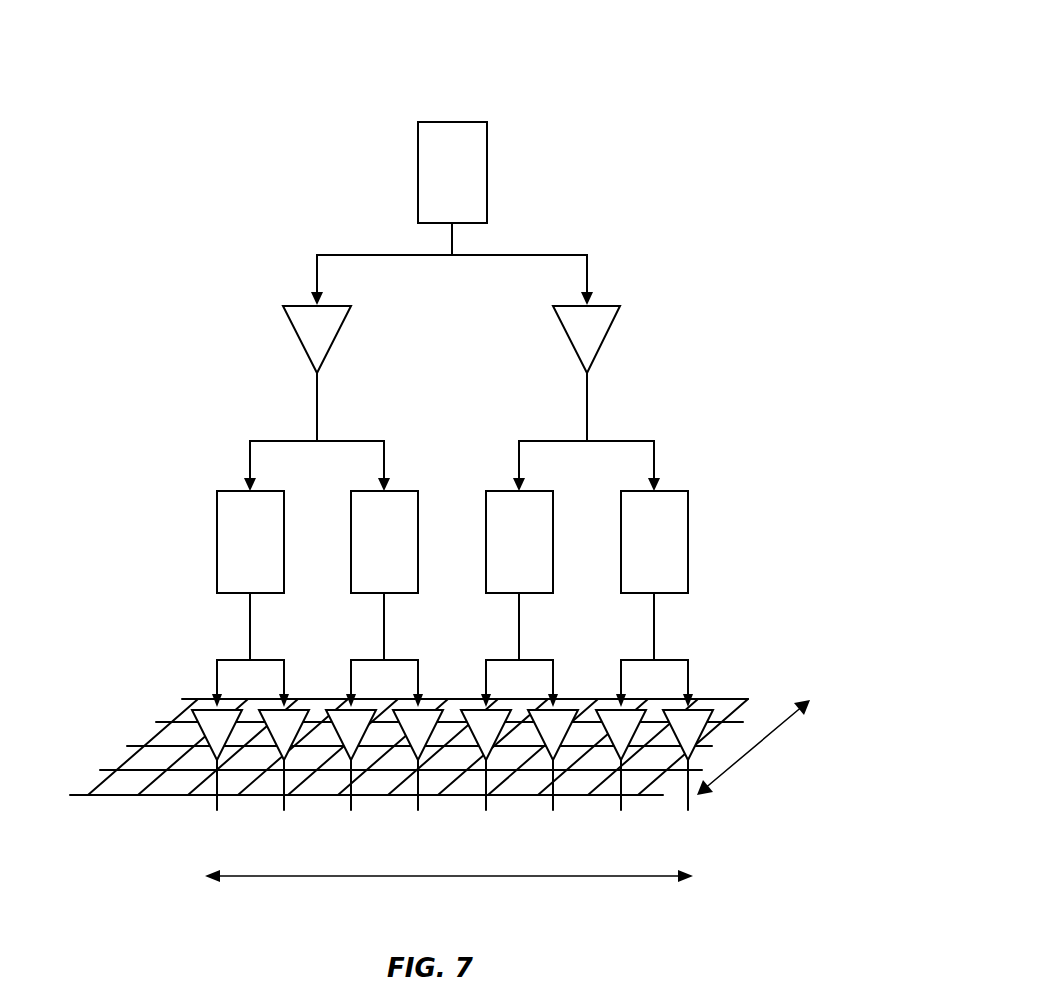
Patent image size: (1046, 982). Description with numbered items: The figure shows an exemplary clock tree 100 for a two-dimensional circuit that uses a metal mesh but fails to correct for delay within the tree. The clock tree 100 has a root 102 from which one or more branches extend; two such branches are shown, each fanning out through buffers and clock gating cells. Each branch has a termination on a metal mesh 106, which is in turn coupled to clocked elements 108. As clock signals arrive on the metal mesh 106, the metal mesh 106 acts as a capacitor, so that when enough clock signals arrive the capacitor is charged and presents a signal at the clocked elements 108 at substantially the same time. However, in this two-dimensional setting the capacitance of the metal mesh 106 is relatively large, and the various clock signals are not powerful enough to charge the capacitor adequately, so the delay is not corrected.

The clock tree 100 is at (667, 112).
The root 102 is at (455, 121).
The metal mesh 106 is at (137, 745).
The clocked elements 108 is at (605, 338).